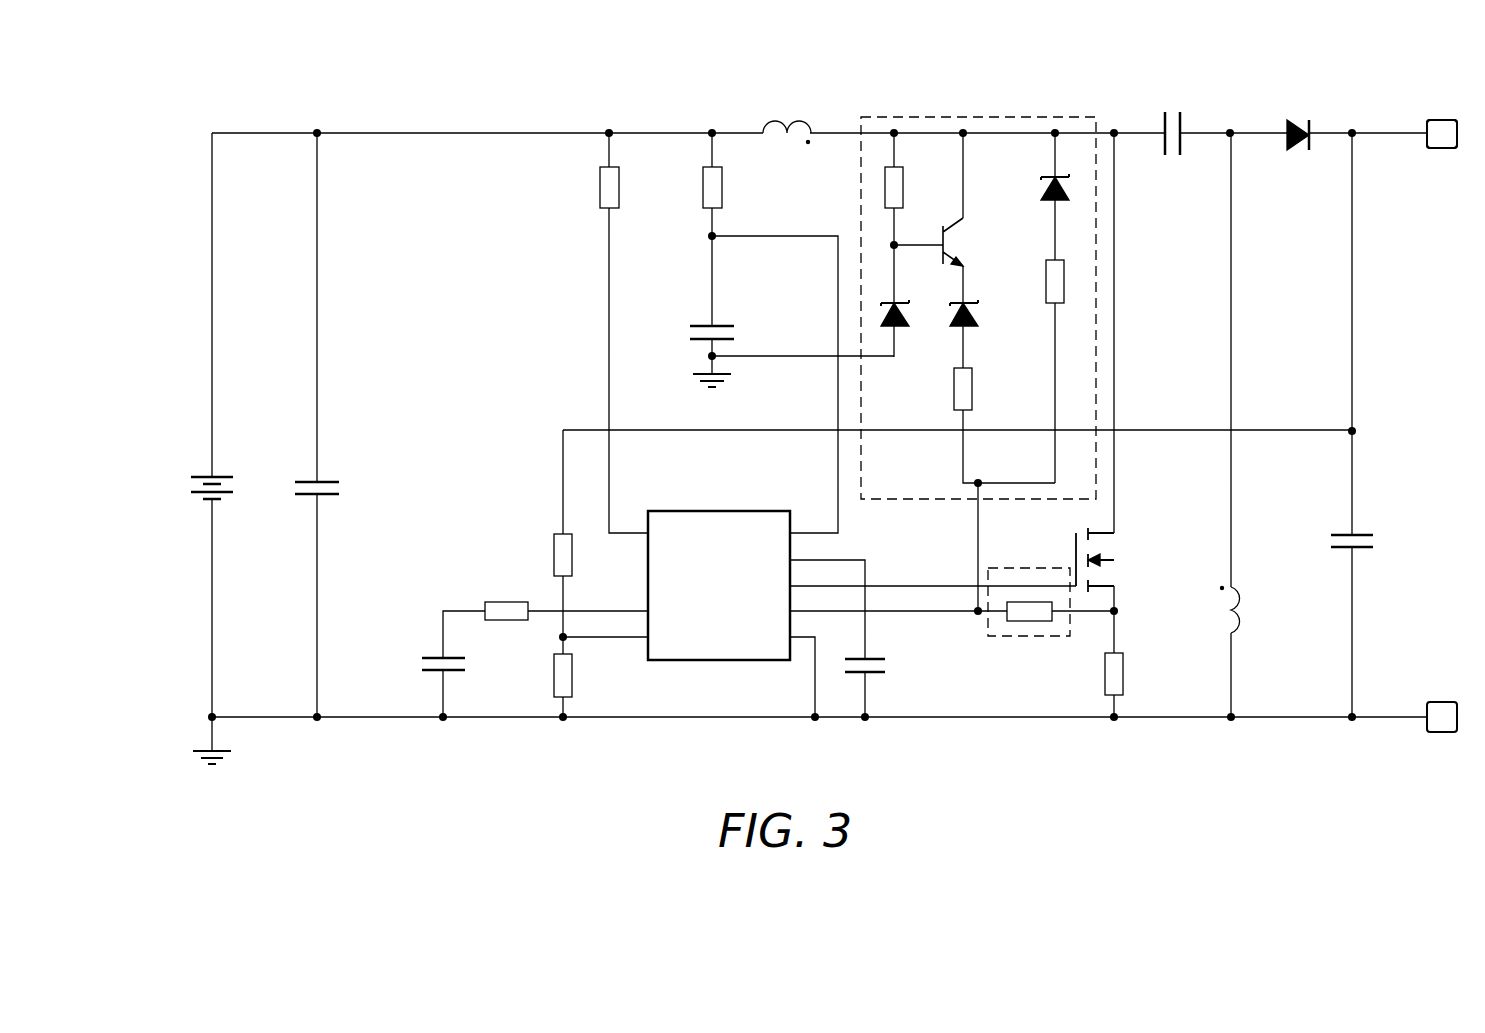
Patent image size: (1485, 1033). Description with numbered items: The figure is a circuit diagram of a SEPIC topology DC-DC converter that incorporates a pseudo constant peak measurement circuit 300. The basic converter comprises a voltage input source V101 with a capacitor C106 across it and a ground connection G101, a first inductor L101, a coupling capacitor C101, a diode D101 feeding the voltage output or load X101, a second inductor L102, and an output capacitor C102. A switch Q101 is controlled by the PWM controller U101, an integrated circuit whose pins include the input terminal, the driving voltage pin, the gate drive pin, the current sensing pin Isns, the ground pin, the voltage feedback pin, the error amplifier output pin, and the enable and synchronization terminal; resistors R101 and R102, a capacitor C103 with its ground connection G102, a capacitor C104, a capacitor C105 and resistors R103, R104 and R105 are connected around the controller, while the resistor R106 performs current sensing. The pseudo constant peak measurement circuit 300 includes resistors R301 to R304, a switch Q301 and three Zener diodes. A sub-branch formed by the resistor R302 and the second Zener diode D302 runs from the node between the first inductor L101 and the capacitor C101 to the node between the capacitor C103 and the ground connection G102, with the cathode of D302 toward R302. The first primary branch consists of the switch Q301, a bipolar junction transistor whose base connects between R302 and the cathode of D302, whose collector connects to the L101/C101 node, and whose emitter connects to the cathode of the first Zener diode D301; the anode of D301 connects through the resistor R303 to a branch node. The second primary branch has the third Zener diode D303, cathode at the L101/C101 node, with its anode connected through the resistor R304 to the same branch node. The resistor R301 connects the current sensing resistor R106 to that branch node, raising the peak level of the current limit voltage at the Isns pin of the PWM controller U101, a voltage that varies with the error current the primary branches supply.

The voltage input source V101 is at (189, 485).
The capacitor C106 is at (341, 489).
The ground connection G101 is at (214, 768).
The resistor R102 is at (600, 190).
The resistor R101 is at (723, 191).
The first inductor L101 is at (789, 120).
The capacitor C103 is at (737, 333).
The ground connection G102 is at (722, 388).
The pseudo constant peak measurement circuit 300 is at (1070, 117).
The resistor R302 is at (904, 164).
The switch Q301 is at (964, 240).
The second Zener diode D302 is at (904, 328).
The first Zener diode D301 is at (972, 328).
The resistor R303 is at (955, 410).
The third Zener diode D303 is at (1070, 187).
The resistor R304 is at (1065, 282).
The capacitor C101 is at (1170, 112).
The diode D101 is at (1295, 120).
The voltage output or load X101 is at (1442, 120).
The second inductor L102 is at (1245, 612).
The capacitor C102 is at (1375, 543).
The switch Q101 is at (1118, 545).
The resistor R301 is at (1028, 622).
The resistor R106 is at (1125, 674).
The capacitor C104 is at (888, 666).
The capacitor C105 is at (421, 664).
The resistor R103 is at (505, 622).
The resistor R104 is at (553, 553).
The resistor R105 is at (575, 681).
The PWM controller U101 is at (722, 664).